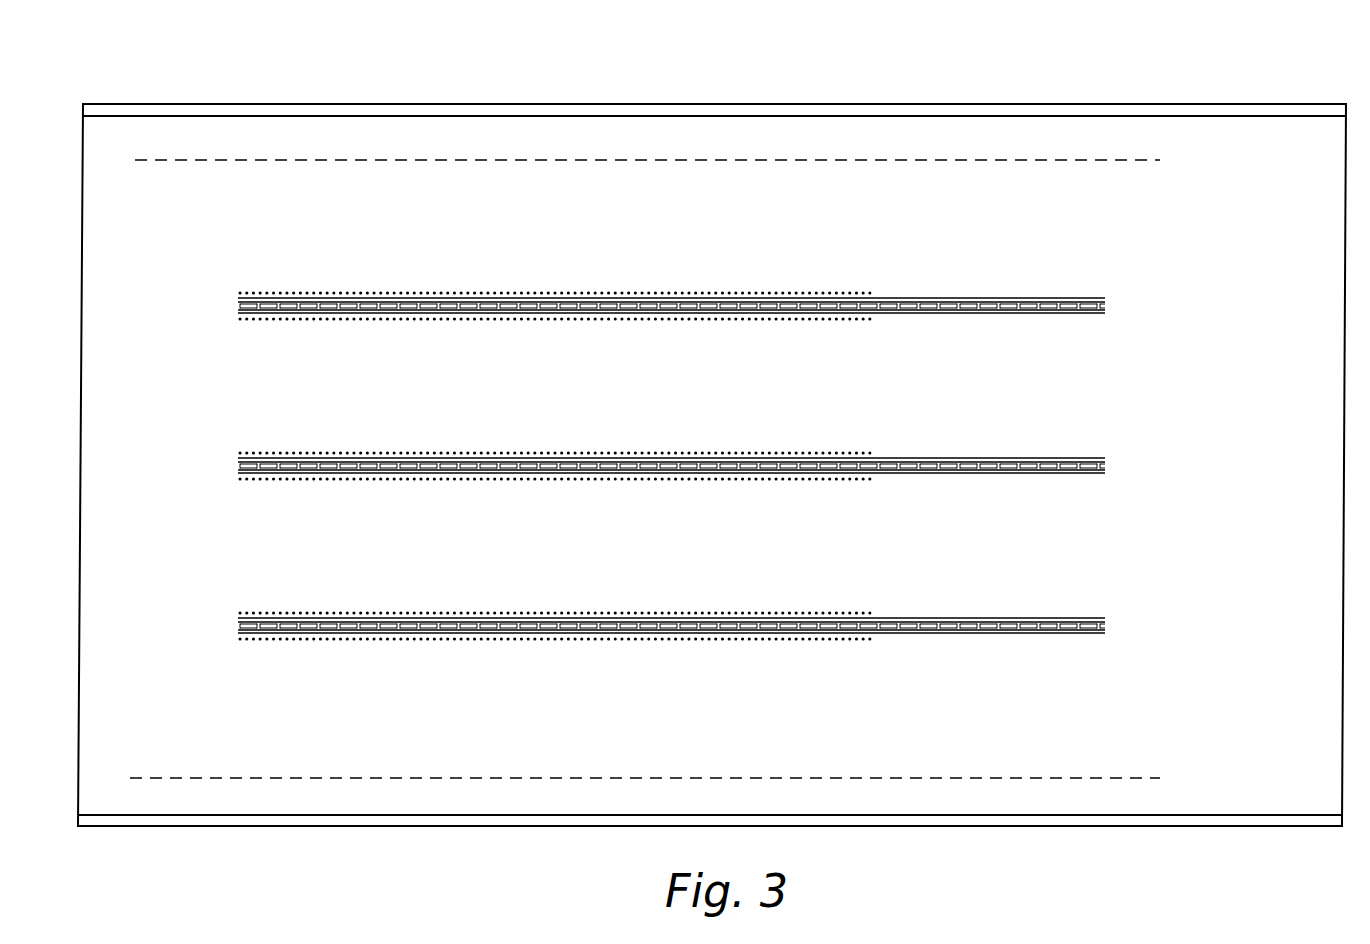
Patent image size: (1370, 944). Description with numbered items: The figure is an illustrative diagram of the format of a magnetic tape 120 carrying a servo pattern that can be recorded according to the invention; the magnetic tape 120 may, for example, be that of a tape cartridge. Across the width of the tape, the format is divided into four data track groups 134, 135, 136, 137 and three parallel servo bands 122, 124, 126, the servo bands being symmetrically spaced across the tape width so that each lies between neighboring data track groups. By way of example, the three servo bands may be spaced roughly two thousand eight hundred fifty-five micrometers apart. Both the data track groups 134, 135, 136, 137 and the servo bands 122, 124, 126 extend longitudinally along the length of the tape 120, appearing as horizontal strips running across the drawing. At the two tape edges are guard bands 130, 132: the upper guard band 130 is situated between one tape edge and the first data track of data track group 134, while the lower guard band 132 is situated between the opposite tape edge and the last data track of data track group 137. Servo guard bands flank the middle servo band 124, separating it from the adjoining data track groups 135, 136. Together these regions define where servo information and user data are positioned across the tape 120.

The magnetic tape 120 is at (1183, 72).
The servo band 122 is at (1117, 275).
The servo band 124 is at (1115, 442).
The servo band 126 is at (1116, 603).
The guard band 130 is at (297, 128).
The guard band 132 is at (310, 813).
The data track group 134 is at (723, 259).
The data track group 135 is at (723, 418).
The data track group 136 is at (723, 578).
The data track group 137 is at (723, 738).